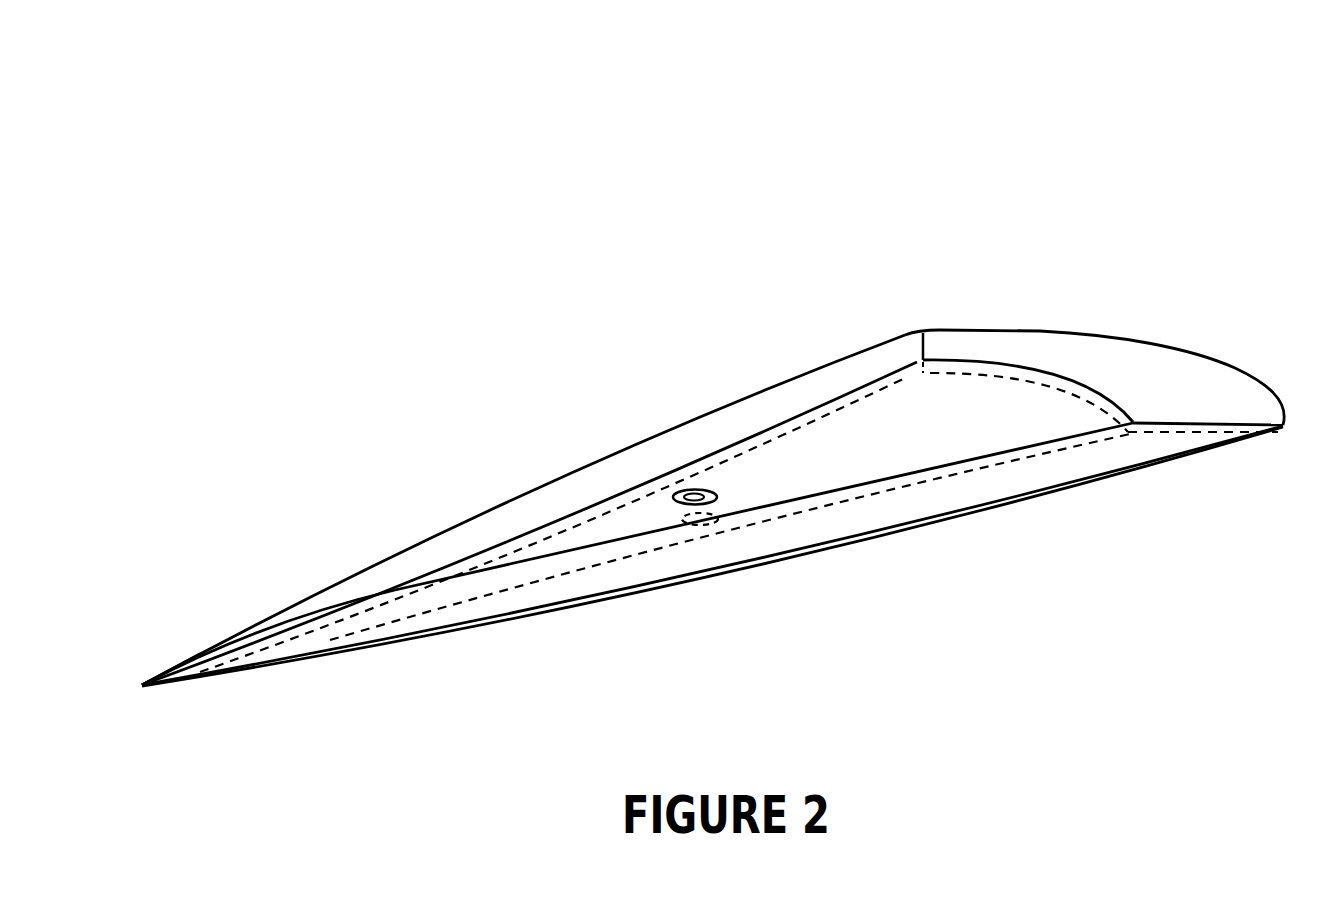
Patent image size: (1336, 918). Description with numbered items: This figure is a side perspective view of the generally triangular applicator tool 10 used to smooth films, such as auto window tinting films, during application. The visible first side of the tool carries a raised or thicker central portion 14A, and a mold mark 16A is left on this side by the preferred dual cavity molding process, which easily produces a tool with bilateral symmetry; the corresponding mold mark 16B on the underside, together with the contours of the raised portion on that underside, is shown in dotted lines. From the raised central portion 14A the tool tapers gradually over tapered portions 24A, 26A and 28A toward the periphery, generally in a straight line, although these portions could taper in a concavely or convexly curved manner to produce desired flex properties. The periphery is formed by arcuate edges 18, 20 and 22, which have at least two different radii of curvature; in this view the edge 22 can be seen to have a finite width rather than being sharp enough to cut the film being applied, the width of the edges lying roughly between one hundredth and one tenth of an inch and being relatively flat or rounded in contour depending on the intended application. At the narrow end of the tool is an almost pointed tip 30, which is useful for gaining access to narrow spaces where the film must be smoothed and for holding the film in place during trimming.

The applicator tool 10 is at (897, 186).
The raised central portion 14A is at (887, 413).
The mold mark 16A is at (700, 490).
The mold mark 16B is at (717, 522).
The arcuate edge 18 is at (1100, 332).
The arcuate edge 20 is at (546, 480).
The arcuate edge 22 is at (1060, 493).
The tapered portion 24A is at (1215, 370).
The tapered portion 26A is at (1160, 447).
The tapered portion 28A is at (378, 578).
The tip 30 is at (142, 684).